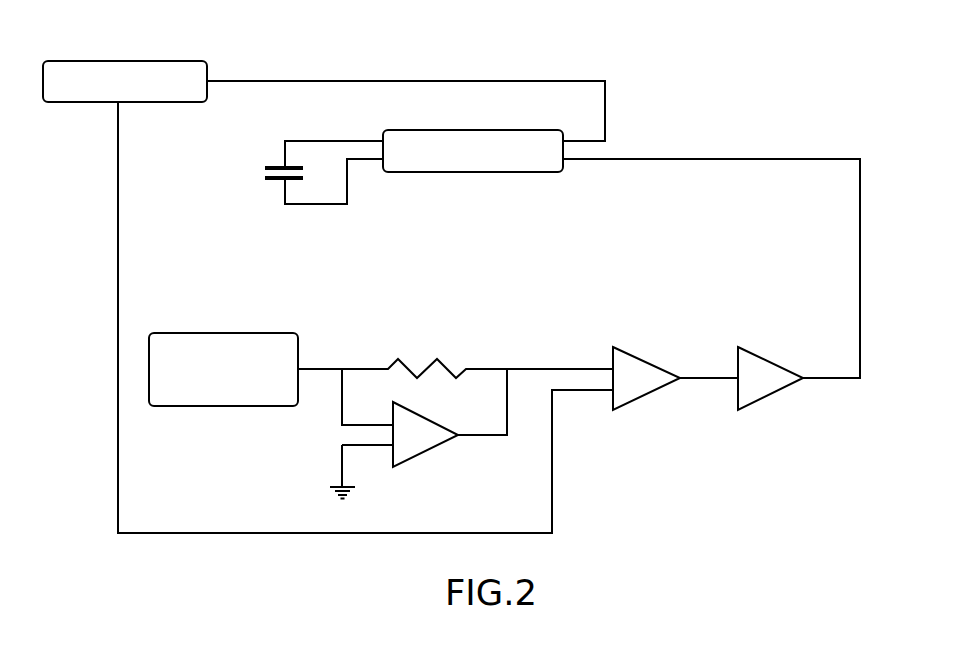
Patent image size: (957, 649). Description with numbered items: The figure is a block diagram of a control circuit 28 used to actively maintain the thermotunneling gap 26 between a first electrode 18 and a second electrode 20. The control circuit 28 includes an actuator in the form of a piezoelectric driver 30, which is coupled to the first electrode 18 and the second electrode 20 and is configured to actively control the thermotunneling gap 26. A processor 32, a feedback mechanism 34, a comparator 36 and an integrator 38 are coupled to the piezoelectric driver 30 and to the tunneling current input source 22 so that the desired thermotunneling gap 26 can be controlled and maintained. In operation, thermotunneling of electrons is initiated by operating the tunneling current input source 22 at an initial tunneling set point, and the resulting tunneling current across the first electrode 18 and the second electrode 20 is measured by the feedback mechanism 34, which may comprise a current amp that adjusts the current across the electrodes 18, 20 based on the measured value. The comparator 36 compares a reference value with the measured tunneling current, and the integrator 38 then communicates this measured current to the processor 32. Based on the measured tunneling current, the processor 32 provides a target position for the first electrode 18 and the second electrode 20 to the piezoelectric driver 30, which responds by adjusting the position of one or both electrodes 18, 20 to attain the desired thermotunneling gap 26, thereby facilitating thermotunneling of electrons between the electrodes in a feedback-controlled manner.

The first electrode 18 is at (267, 165).
The second electrode 20 is at (267, 181).
The tunneling current input source 22 is at (228, 333).
The thermotunneling gap 26 is at (264, 173).
The control circuit 28 is at (748, 542).
The piezoelectric driver 30 is at (470, 173).
The processor 32 is at (121, 60).
The feedback mechanism 34 is at (425, 456).
The comparator 36 is at (646, 400).
The integrator 38 is at (771, 400).